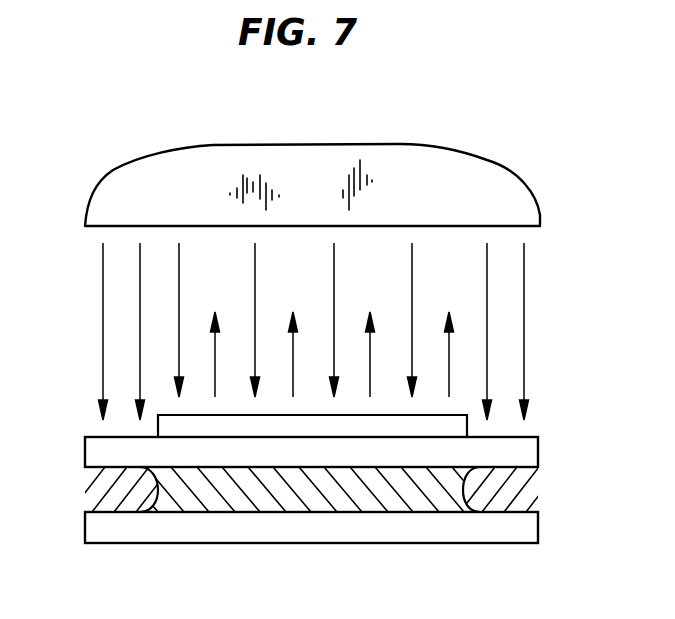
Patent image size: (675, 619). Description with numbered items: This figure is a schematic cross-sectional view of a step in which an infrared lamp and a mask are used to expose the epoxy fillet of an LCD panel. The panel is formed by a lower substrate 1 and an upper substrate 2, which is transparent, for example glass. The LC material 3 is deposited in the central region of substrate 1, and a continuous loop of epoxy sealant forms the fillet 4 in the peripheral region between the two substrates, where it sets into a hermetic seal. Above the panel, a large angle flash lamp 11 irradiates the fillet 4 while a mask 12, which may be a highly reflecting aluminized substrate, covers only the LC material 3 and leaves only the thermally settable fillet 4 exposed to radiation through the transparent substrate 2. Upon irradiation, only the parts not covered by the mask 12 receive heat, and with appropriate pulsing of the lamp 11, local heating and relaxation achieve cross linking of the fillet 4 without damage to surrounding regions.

The substrate 1 is at (530, 527).
The substrate 2 is at (530, 452).
The LC material 3 is at (342, 500).
The epoxy fillet 4 is at (83, 495).
The large angle flash lamp 11 is at (528, 188).
The mask 12 is at (452, 416).